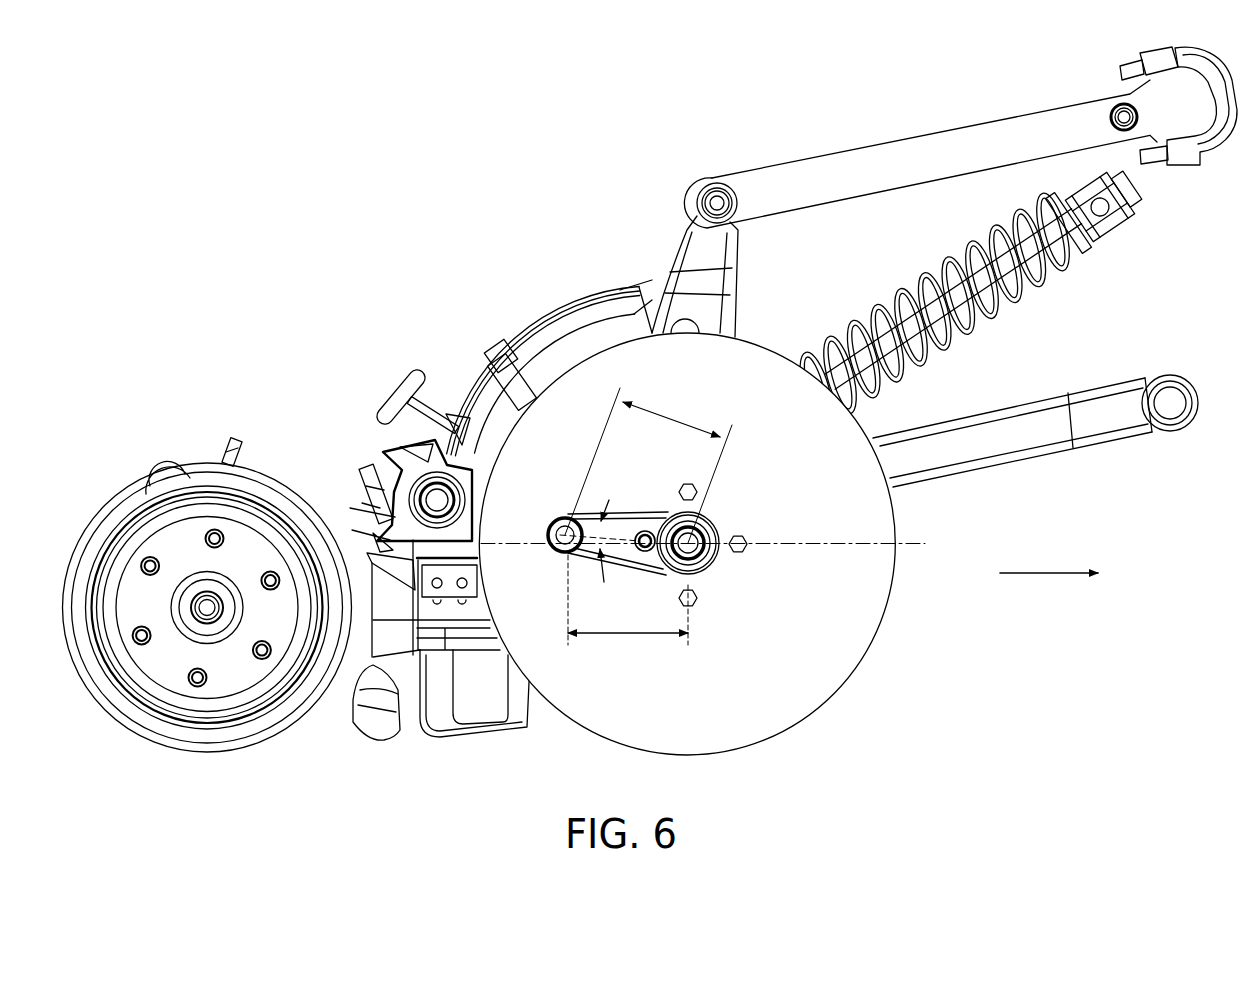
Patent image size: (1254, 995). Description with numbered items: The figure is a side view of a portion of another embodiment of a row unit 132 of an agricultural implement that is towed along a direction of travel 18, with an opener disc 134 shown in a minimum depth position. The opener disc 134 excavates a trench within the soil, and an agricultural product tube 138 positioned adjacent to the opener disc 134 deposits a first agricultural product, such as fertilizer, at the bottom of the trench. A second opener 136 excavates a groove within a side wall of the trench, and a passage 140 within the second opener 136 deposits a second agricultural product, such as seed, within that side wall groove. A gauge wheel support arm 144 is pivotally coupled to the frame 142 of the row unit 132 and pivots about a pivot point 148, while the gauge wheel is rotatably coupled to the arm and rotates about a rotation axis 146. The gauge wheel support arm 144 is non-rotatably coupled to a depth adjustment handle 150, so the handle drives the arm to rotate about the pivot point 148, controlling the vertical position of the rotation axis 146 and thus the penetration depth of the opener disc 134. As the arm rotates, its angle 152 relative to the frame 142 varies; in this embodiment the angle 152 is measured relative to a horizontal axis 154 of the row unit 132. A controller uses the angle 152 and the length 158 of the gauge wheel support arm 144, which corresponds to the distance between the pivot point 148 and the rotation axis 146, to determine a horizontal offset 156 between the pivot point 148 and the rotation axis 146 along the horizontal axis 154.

The direction of travel 18 is at (1048, 573).
The row unit 132 is at (468, 282).
The opener disc 134 is at (833, 678).
The second opener 136 is at (435, 720).
The agricultural product tube 138 is at (545, 330).
The passage 140 is at (372, 665).
The frame 142 is at (597, 293).
The gauge wheel support arm 144 is at (658, 510).
The rotation axis 146 is at (566, 518).
The pivot point 148 is at (716, 530).
The depth adjustment handle 150 is at (398, 398).
The angle 152 is at (606, 580).
The horizontal axis 154 is at (528, 544).
The horizontal offset 156 is at (622, 645).
The length 158 is at (683, 412).